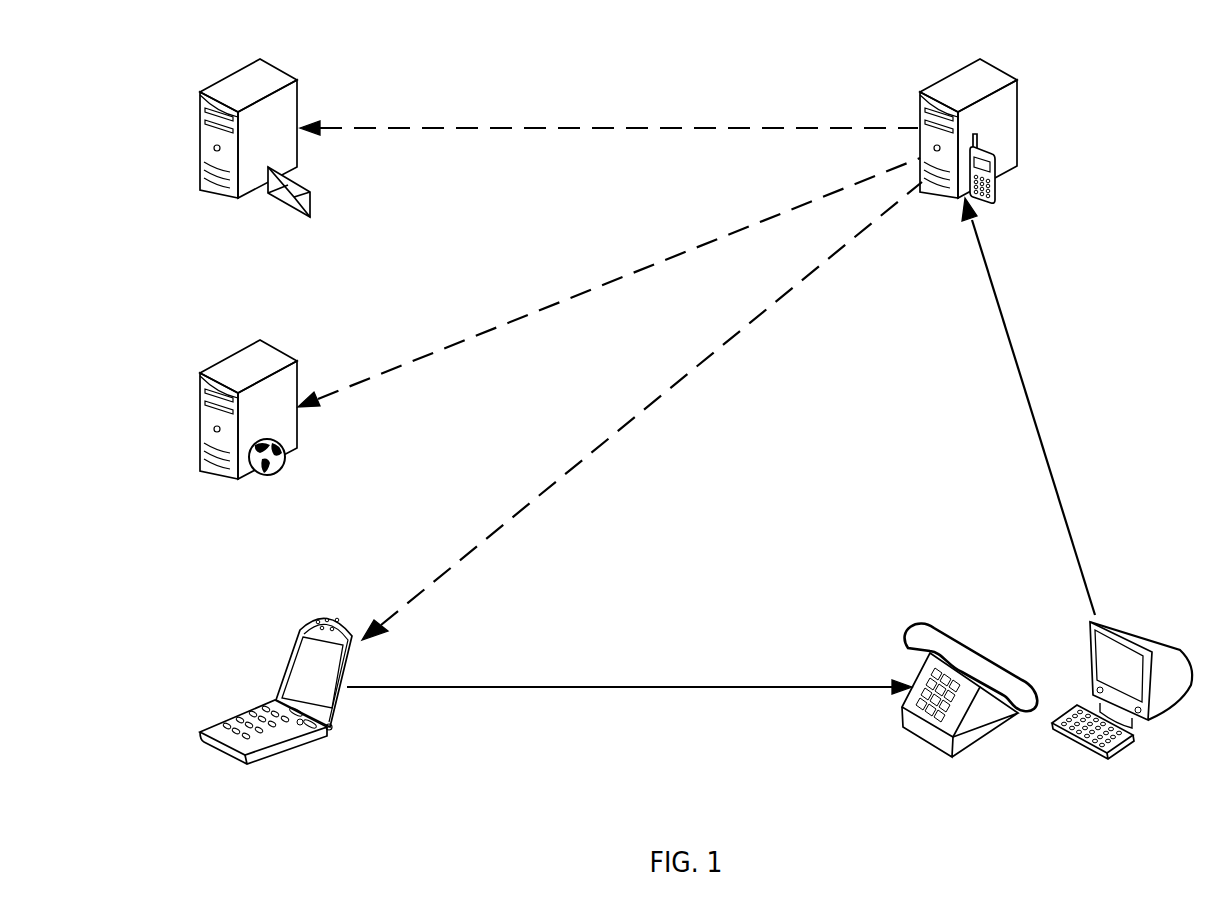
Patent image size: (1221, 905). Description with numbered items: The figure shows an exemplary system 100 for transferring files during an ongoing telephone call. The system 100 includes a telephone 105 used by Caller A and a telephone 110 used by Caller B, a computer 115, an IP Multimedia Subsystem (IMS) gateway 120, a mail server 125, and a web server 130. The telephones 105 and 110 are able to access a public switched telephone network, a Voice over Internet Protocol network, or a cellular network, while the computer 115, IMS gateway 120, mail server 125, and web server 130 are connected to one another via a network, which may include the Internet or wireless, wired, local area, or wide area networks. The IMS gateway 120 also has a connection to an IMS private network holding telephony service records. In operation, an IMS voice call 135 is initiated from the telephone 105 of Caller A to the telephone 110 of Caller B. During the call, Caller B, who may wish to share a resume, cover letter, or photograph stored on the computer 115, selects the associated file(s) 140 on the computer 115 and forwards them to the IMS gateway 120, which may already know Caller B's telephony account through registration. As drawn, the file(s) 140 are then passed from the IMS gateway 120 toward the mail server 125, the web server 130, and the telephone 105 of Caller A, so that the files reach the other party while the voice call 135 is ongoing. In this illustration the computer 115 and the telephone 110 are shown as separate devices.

The system 100 is at (706, 33).
The telephone 105 is at (300, 626).
The telephone 110 is at (938, 624).
The computer 115 is at (1144, 622).
The IP Multimedia Subsystem (IMS) gateway 120 is at (1004, 64).
The mail server 125 is at (282, 64).
The web server 130 is at (284, 344).
The IMS voice call 135 is at (629, 676).
The file(s) 140 is at (696, 380).